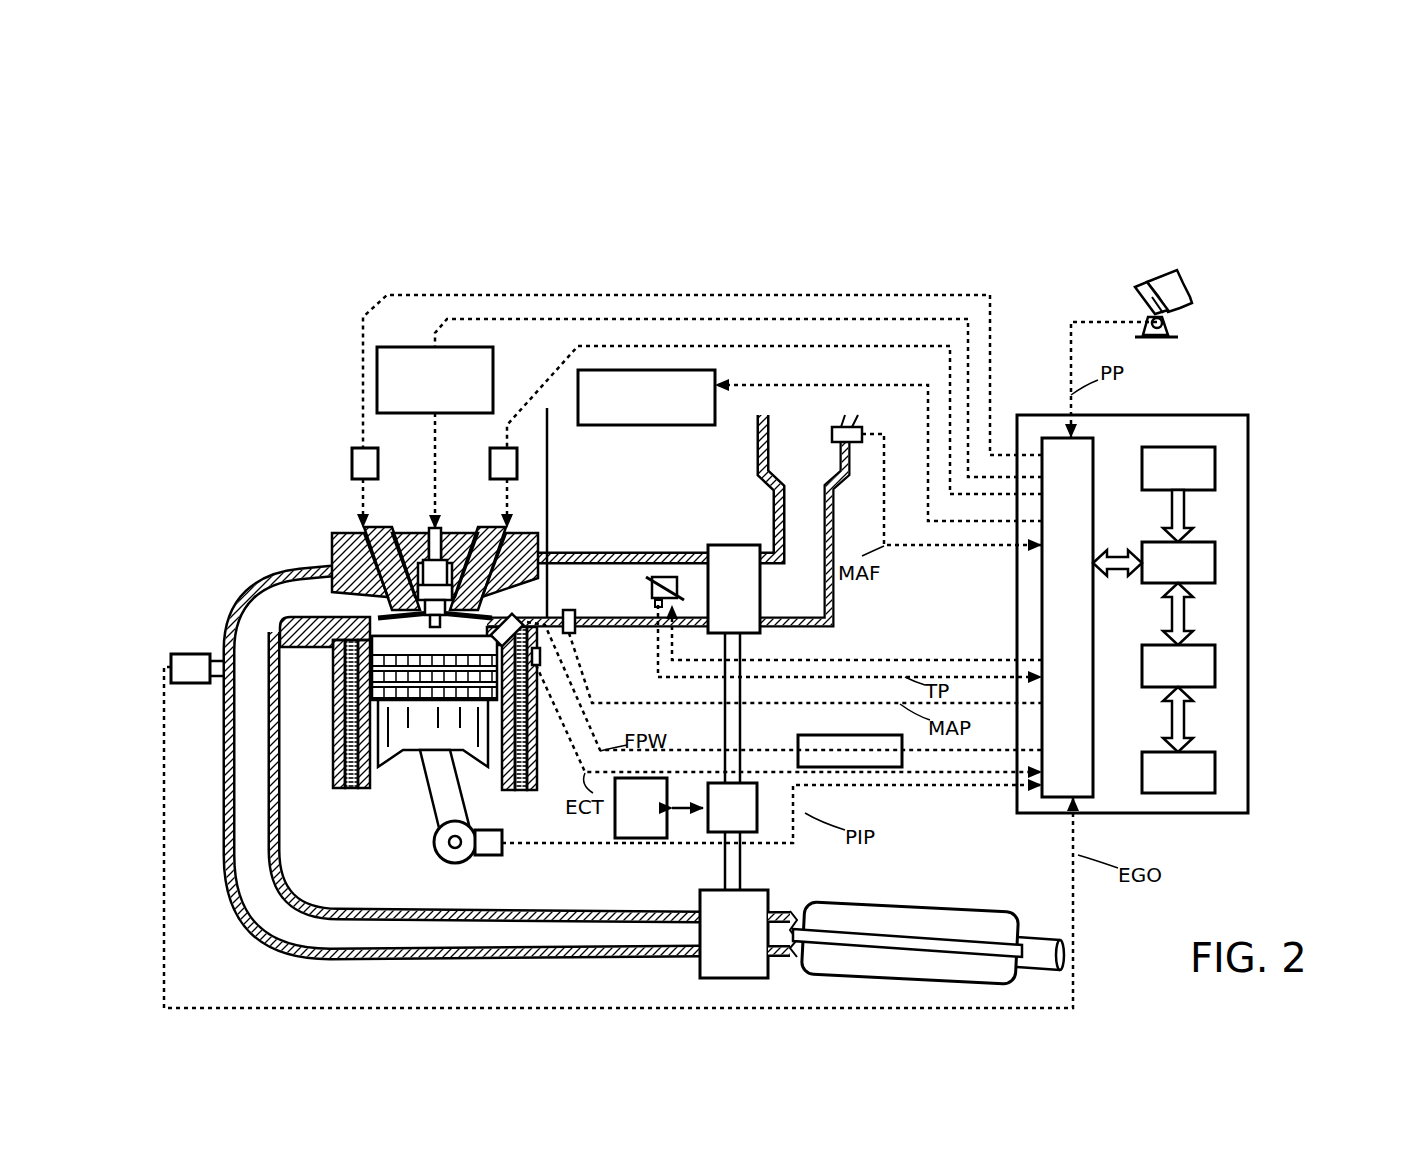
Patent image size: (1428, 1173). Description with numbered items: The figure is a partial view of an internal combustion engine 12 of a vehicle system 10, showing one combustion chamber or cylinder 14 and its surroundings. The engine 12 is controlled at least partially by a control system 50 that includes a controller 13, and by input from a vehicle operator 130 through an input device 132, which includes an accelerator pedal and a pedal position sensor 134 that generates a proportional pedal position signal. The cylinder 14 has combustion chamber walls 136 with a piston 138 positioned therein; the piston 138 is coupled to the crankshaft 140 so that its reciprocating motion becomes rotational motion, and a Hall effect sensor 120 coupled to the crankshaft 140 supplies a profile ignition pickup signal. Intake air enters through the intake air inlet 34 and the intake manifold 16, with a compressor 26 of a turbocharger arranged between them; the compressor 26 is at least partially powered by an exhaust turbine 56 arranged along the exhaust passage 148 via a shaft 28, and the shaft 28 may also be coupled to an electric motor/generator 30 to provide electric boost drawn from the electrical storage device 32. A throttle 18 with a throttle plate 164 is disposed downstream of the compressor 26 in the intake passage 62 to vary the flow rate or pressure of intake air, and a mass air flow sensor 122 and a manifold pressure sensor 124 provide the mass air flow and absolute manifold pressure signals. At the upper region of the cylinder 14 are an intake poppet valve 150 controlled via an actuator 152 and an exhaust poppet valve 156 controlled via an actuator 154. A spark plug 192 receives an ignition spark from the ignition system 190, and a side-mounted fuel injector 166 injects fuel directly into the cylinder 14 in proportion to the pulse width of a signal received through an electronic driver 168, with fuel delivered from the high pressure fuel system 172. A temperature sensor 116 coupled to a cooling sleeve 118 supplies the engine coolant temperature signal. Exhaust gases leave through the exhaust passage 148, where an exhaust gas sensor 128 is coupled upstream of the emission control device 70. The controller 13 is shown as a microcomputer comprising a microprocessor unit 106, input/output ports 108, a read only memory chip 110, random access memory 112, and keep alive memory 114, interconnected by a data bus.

The vehicle system 10 is at (255, 240).
The internal combustion engine 12 is at (265, 492).
The controller 13 is at (1232, 415).
The combustion chamber 14 is at (430, 637).
The intake manifold 16 is at (589, 598).
The throttle 18 is at (664, 577).
The compressor 26 is at (717, 545).
The shaft 28 is at (742, 850).
The electric motor/generator 30 is at (745, 819).
The electrical storage device 32 is at (654, 819).
The intake air inlet 34 is at (812, 462).
The control system 50 is at (1340, 308).
The exhaust turbine 56 is at (700, 960).
The throttle body passage 62 is at (650, 629).
The emission control device 70 is at (978, 905).
The microprocessor unit 106 is at (1215, 565).
The input/output ports 108 is at (1100, 445).
The read only memory chip 110 is at (1215, 470).
The random access memory 112 is at (1215, 668).
The keep alive memory 114 is at (1215, 775).
The temperature sensor 116 is at (538, 668).
The cooling sleeve 118 is at (525, 765).
The Hall effect sensor 120 is at (495, 856).
The mass air flow sensor 122 is at (858, 427).
The manifold pressure sensor 124 is at (571, 635).
The exhaust gas sensor 128 is at (171, 660).
The vehicle operator 130 is at (1188, 292).
The input device 132 is at (1140, 303).
The pedal position sensor 134 is at (1165, 322).
The combustion chamber walls 136 is at (370, 788).
The piston 138 is at (417, 745).
The crankshaft 140 is at (445, 858).
The exhaust passage 148 is at (322, 612).
The intake poppet valve 150 is at (463, 595).
The actuator 152 is at (490, 465).
The actuator 154 is at (352, 460).
The exhaust poppet valve 156 is at (378, 592).
The throttle plate 164 is at (684, 603).
The fuel injector 166 is at (493, 630).
The electronic driver 168 is at (800, 738).
The high pressure fuel system 172 is at (642, 425).
The ignition system 190 is at (392, 347).
The spark plug 192 is at (430, 570).